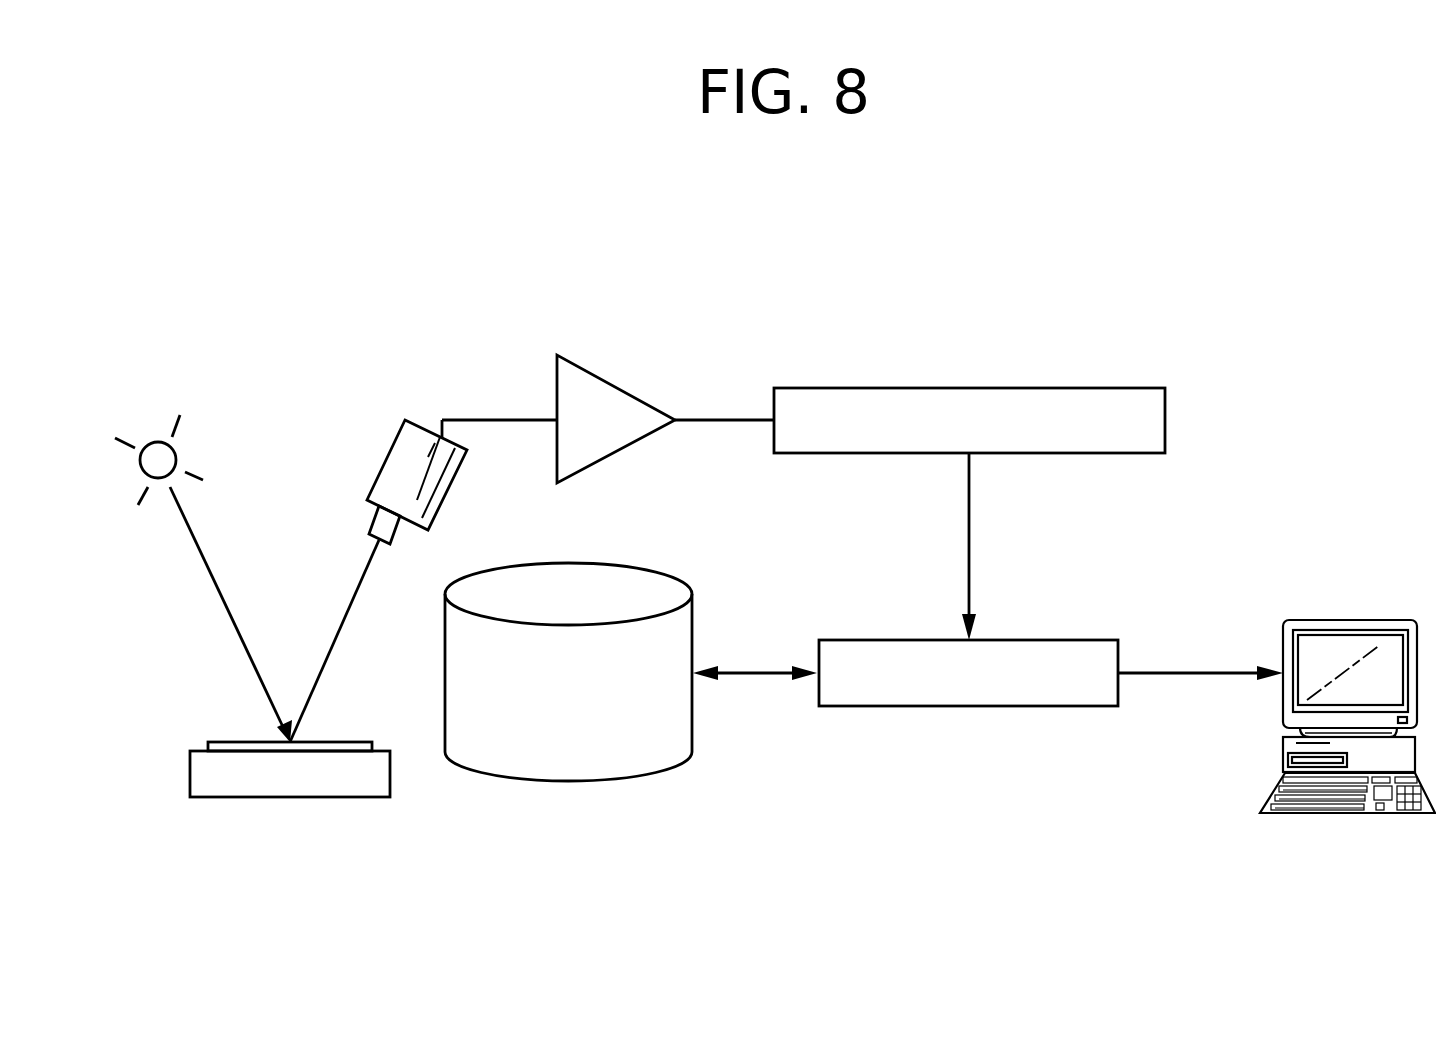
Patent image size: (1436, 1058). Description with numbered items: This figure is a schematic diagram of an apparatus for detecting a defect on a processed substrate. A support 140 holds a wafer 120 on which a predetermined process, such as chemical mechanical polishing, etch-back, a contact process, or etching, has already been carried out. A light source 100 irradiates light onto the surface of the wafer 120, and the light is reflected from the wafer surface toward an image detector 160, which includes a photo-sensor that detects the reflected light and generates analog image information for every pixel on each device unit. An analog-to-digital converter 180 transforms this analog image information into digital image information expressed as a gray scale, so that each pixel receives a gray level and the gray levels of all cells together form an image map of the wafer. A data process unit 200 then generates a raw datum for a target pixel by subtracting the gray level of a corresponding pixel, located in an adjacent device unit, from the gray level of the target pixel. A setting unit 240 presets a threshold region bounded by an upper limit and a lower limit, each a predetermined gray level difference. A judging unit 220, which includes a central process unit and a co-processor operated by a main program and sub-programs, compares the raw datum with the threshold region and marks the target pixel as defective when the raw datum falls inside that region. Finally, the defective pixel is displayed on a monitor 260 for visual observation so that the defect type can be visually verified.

The light source 100 is at (157, 442).
The wafer 120 is at (215, 747).
The support 140 is at (290, 798).
The image detector 160 is at (386, 458).
The analog-to-digital converter 180 is at (618, 388).
The data process unit 200 is at (969, 388).
The judging unit 220 is at (969, 707).
The setting unit 240 is at (589, 760).
The computer 260 is at (1350, 620).